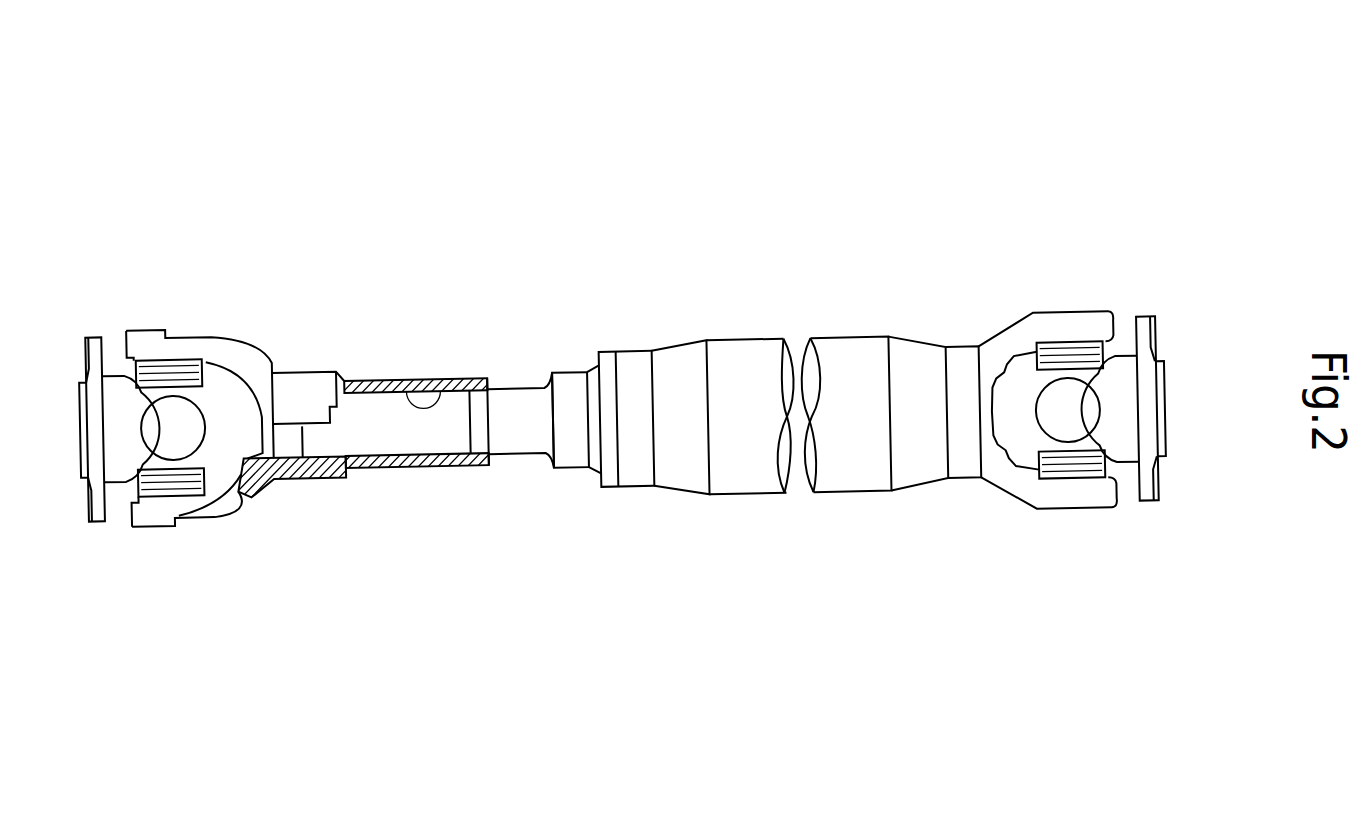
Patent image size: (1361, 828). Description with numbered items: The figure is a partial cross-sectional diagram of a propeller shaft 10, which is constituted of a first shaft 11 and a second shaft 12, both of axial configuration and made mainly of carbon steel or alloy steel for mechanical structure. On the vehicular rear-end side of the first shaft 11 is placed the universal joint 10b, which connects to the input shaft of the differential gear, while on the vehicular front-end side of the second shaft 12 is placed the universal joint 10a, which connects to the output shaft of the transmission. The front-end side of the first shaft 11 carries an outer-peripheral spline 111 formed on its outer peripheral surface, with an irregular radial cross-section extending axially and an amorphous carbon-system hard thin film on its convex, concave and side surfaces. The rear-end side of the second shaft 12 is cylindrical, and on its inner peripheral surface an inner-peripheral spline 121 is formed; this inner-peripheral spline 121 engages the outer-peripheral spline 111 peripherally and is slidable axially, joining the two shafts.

The propeller shaft 10 is at (982, 168).
The universal joint 10a is at (156, 560).
The universal joint 10b is at (1054, 553).
The first shaft 11 is at (752, 348).
The second shaft 12 is at (257, 358).
The inner-peripheral spline 121 is at (447, 379).
The outer-peripheral spline 111 is at (419, 469).